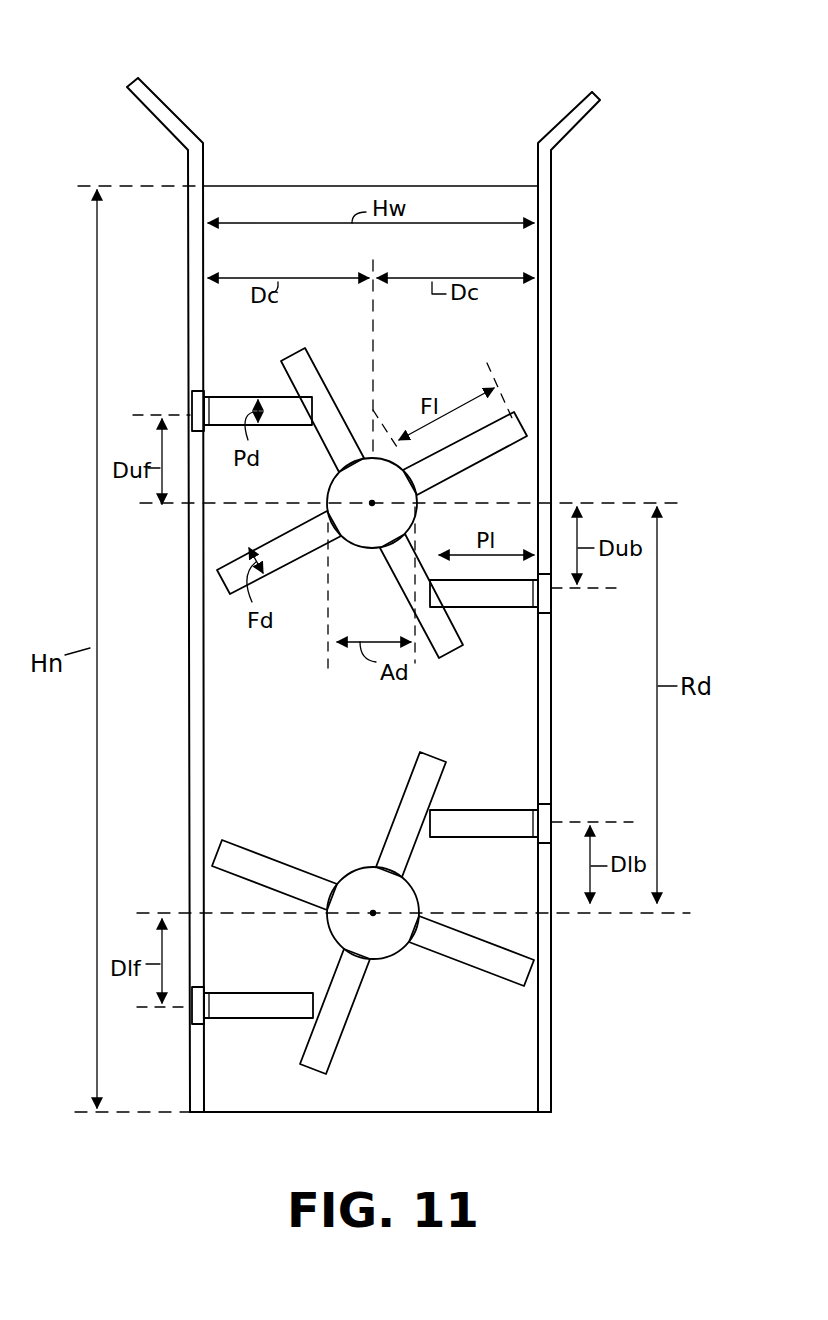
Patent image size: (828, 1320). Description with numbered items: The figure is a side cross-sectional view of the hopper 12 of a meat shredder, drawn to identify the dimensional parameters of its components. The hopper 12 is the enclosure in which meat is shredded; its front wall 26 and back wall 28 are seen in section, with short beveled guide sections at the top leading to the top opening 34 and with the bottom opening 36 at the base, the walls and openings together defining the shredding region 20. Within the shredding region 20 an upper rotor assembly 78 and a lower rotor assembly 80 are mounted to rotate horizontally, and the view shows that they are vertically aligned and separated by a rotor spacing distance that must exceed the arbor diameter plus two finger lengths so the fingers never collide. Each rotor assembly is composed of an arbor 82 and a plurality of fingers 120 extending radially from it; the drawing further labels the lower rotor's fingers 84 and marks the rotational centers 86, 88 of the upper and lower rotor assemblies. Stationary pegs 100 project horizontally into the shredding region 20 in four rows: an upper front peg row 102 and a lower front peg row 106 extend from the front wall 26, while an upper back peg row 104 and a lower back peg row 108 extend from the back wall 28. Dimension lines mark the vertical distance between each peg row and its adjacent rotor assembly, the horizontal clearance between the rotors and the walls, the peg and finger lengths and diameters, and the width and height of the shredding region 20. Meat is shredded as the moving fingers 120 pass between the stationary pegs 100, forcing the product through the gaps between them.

The hopper 12 is at (378, 575).
The shredding region 20 is at (288, 763).
The front wall 26 is at (190, 335).
The back wall 28 is at (552, 323).
The top opening 34 is at (487, 157).
The bottom opening 36 is at (490, 1112).
The upper rotor assembly 78 is at (372, 503).
The lower rotor assembly 80 is at (373, 913).
The arbor 82 is at (350, 543).
The lower rotor blade 84 is at (415, 892).
The upper rotor axis 86 is at (372, 507).
The lower rotor axis 88 is at (373, 915).
The peg 100 is at (252, 1022).
The upper front peg row 102 is at (178, 382).
The upper back peg row 104 is at (560, 624).
The lower front peg row 106 is at (184, 1033).
The lower back peg row 108 is at (562, 802).
The finger 120 is at (352, 1017).